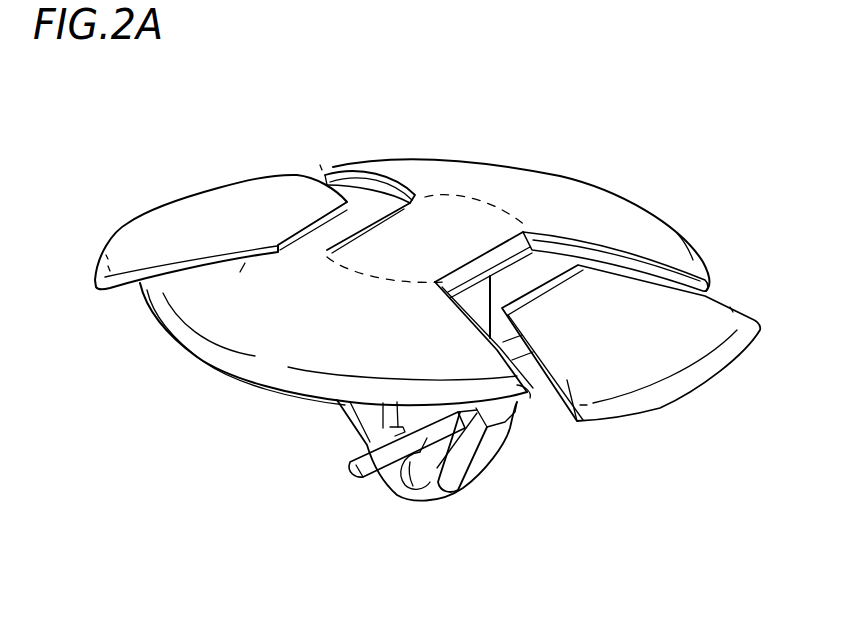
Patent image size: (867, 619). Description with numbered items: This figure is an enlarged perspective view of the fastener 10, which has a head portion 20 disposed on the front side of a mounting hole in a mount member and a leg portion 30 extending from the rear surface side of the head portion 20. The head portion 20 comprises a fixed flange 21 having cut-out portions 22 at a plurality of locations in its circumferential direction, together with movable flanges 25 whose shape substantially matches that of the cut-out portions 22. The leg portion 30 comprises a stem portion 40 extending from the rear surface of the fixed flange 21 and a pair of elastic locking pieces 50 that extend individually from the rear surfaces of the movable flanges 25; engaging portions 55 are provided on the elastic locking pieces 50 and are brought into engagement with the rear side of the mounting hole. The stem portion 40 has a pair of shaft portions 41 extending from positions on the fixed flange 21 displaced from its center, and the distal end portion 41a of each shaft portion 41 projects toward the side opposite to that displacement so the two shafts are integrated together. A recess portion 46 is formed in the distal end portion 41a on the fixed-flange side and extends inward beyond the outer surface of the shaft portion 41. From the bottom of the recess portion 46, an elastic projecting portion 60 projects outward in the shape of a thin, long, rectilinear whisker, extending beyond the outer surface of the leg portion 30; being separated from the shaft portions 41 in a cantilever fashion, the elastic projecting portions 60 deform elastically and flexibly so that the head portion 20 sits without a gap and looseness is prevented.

The fastener 10 is at (190, 158).
The head portion 20 is at (750, 203).
The fixed flange 21 is at (560, 197).
The cut-out portions 22 is at (245, 263).
The movable flanges 25 is at (272, 182).
The leg portion 30 is at (447, 505).
The stem portion 40 is at (354, 424).
The shaft portions 41 is at (357, 438).
The distal end portion 41a is at (420, 475).
The recess portion 46 is at (406, 458).
The elastic locking pieces 50 is at (348, 403).
The engaging portions 55 is at (507, 422).
The elastic projecting portions 60 is at (347, 472).